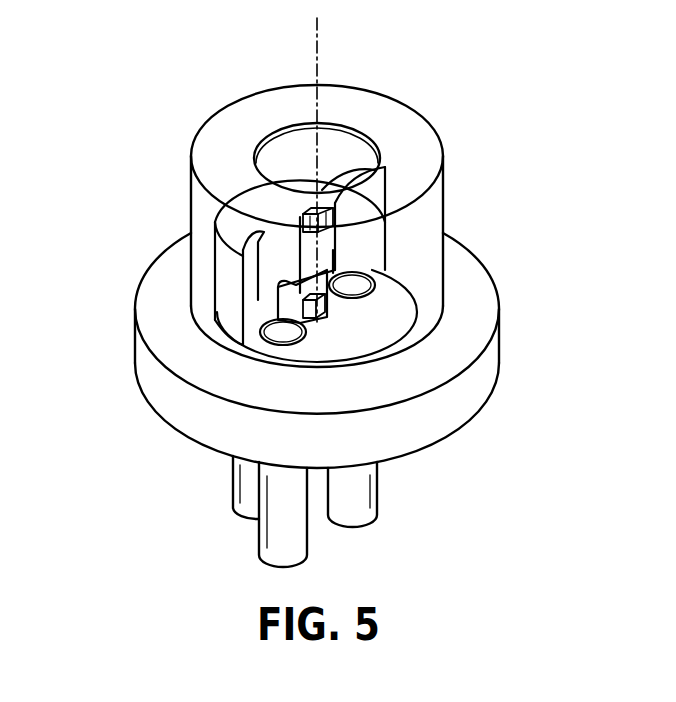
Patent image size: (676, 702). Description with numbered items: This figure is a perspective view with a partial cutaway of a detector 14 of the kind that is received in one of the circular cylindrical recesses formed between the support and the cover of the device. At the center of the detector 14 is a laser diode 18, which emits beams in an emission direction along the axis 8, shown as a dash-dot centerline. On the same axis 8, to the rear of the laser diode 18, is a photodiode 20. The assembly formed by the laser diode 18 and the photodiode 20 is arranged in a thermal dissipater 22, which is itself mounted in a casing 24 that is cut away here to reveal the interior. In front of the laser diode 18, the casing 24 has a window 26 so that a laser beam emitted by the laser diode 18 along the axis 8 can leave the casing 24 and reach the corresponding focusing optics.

The axis 8 is at (319, 44).
The detector 14 is at (118, 361).
The laser diode 18 is at (300, 211).
The photodiode 20 is at (339, 308).
The thermal dissipater 22 is at (227, 273).
The casing 24 is at (445, 205).
The window 26 is at (291, 138).